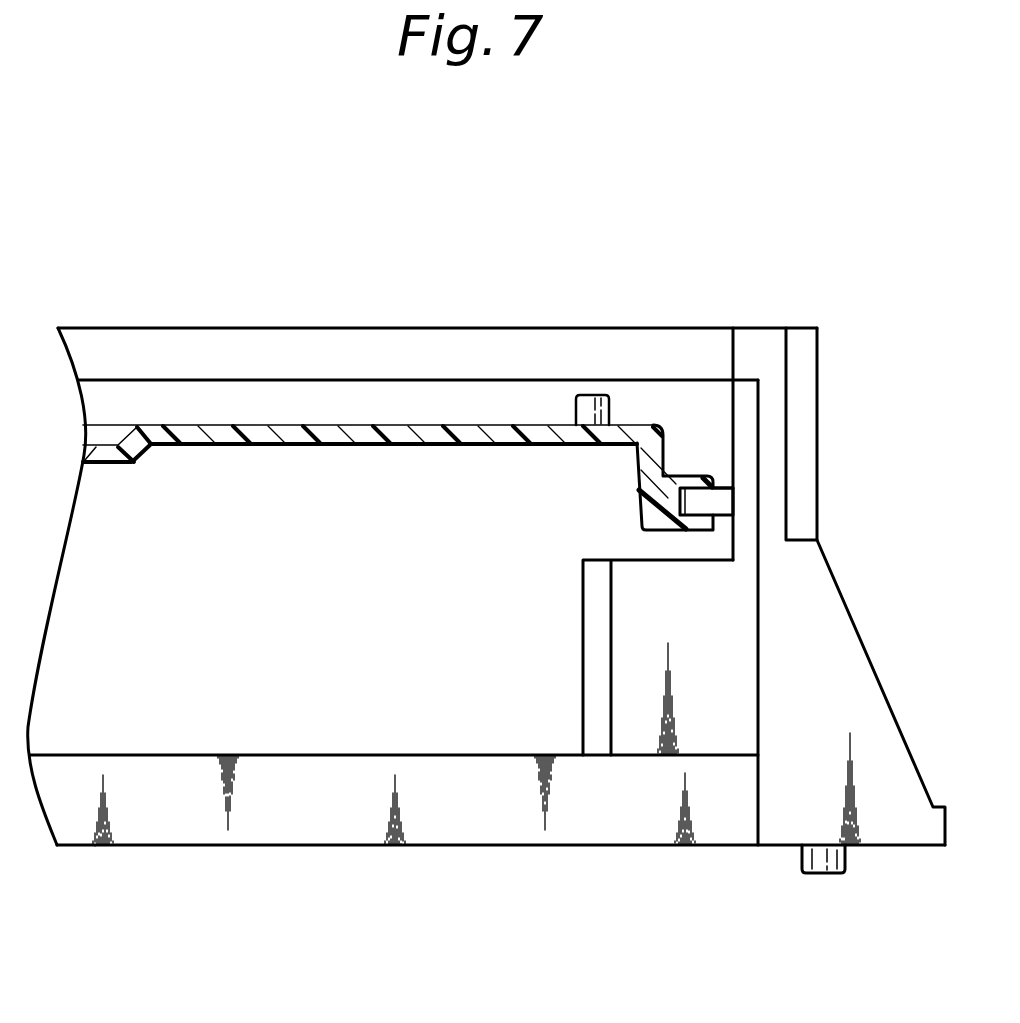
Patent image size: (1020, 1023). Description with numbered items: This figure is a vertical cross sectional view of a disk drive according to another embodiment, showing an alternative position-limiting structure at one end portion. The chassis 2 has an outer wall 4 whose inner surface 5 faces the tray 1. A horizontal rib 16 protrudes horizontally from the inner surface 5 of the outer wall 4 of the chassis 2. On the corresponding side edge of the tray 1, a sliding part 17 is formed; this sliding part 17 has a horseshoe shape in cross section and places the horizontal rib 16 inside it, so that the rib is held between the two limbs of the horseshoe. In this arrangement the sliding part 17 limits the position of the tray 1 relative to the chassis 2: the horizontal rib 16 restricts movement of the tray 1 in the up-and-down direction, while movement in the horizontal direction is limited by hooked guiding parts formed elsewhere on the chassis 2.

The tray 1 is at (366, 432).
The chassis 2 is at (796, 320).
The outer wall 4 is at (748, 444).
The inner surface 5 is at (732, 421).
The horizontal rib 16 is at (720, 502).
The sliding part 17 is at (647, 507).